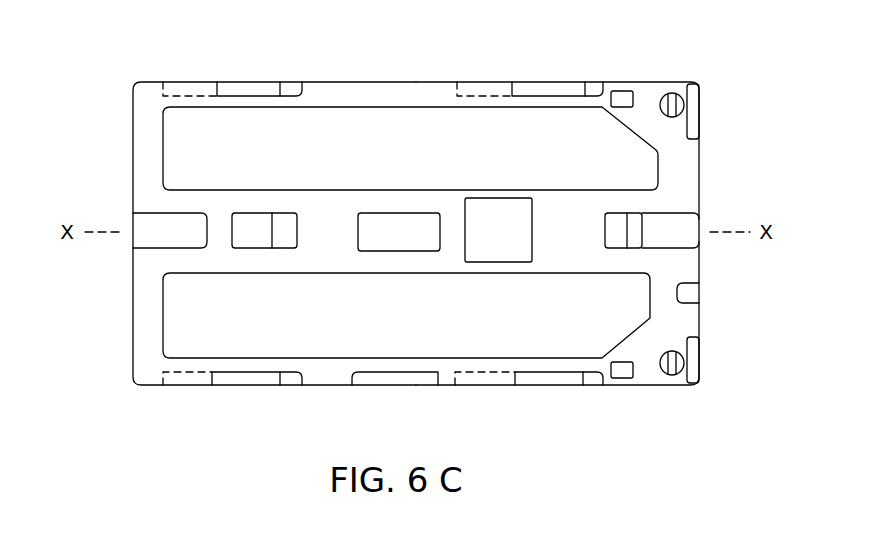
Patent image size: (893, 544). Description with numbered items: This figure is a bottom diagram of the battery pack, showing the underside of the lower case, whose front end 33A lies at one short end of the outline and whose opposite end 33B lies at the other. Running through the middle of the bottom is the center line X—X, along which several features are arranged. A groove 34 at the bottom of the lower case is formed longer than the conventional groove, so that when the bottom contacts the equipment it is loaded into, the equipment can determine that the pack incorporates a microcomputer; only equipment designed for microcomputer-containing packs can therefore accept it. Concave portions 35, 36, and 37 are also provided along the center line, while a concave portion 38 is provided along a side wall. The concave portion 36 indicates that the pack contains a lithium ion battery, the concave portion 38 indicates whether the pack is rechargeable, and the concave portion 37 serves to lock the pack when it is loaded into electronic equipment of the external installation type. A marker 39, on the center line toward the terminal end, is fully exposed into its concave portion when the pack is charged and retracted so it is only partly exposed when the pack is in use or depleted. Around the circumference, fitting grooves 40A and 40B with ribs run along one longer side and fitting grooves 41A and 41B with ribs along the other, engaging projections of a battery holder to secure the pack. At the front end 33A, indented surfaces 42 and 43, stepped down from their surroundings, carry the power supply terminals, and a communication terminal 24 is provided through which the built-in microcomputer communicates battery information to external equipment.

The communication terminal 24 is at (699, 292).
The front end of the lower case 33A is at (700, 147).
The left side wall 33B is at (133, 145).
The groove 34 is at (145, 243).
The concave portion 35 is at (497, 198).
The concave portion 36 is at (389, 225).
The concave portion 37 is at (245, 250).
The concave portion 38 is at (395, 372).
The marker 39 is at (633, 222).
The fitting groove 40A is at (251, 82).
The fitting groove 40B is at (561, 84).
The fitting groove 41A is at (243, 372).
The fitting groove 41B is at (553, 372).
The indented surface 42 is at (695, 83).
The indented surface 43 is at (692, 385).